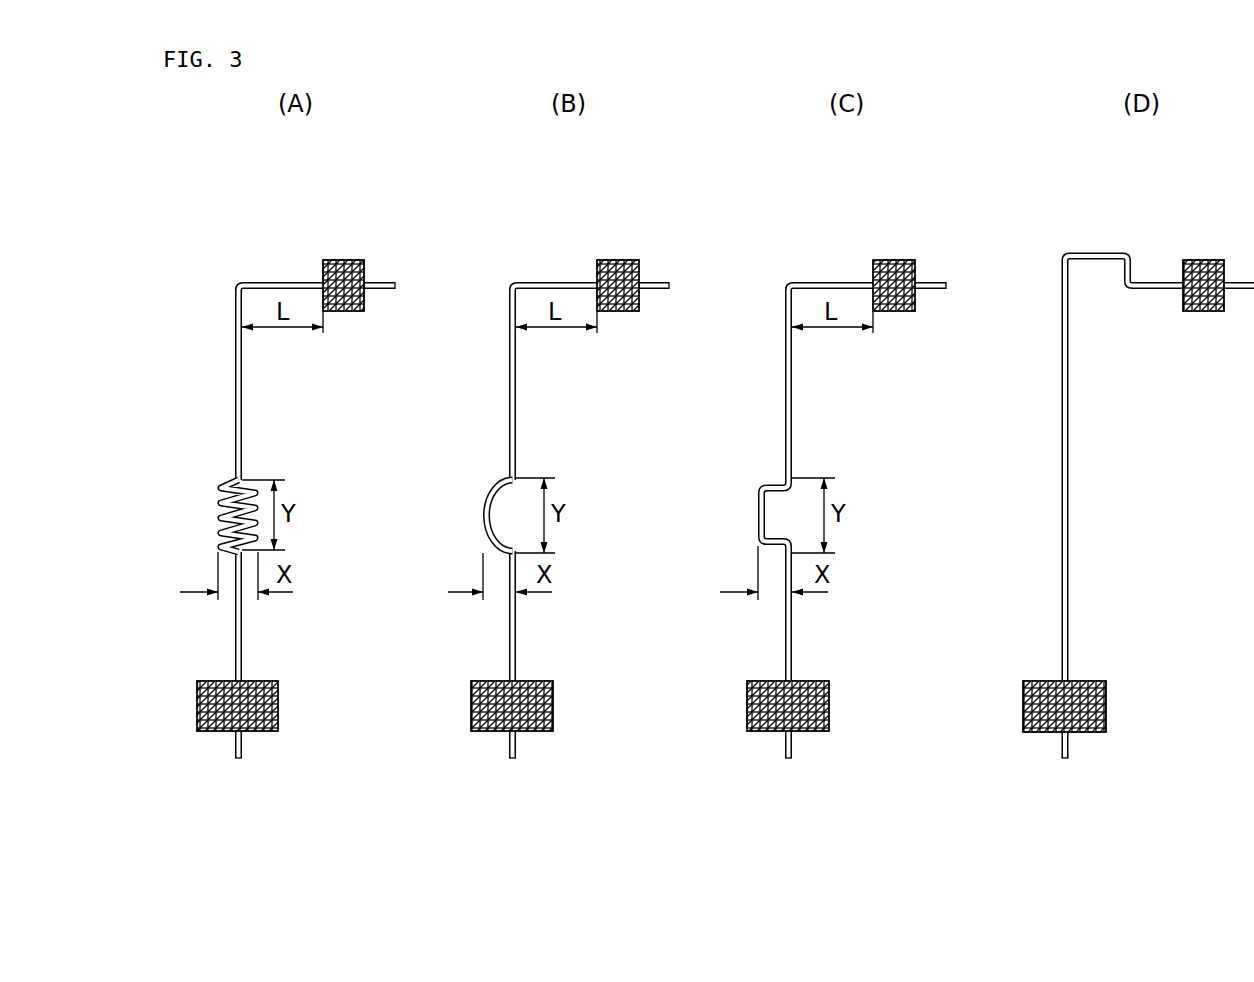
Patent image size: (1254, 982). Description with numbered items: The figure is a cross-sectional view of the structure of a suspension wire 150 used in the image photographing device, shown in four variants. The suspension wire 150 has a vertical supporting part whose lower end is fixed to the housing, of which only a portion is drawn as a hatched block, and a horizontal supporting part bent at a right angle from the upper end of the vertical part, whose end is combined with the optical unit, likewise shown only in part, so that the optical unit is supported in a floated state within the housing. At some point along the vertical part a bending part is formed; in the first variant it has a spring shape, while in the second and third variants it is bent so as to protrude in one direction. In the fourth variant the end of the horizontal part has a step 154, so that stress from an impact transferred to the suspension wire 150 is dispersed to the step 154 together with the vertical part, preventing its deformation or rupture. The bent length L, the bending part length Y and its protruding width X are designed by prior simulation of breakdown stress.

The suspension wire 150 is at (198, 185).
The step 154 is at (1132, 272).